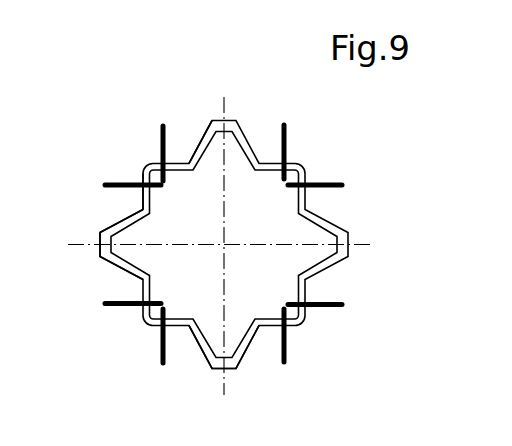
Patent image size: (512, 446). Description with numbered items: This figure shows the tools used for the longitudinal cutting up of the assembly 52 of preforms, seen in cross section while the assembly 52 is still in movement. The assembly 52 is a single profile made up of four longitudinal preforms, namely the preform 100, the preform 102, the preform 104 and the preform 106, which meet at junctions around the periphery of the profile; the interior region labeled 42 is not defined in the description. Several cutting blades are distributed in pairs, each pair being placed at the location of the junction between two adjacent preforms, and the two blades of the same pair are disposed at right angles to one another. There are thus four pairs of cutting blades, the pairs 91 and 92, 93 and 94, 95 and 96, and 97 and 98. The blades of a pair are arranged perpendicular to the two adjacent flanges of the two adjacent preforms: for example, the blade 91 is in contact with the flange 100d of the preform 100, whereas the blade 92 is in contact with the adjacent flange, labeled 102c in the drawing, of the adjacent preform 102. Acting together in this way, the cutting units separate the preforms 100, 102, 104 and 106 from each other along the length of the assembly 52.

The preform 100 is at (224, 78).
The flange 100d is at (196, 152).
The assembly 52 is at (190, 120).
The inner wall (second face) 42 is at (238, 178).
The cutting blade 91 is at (157, 140).
The cutting blade 92 is at (110, 183).
The cutting blade 93 is at (115, 308).
The cutting blade 94 is at (160, 348).
The cutting blade 95 is at (288, 352).
The cutting blade 96 is at (332, 309).
The cutting blade 97 is at (325, 181).
The cutting blade 98 is at (287, 138).
The preform 102 is at (78, 256).
The recessed portion of side lobe 102c is at (142, 195).
The preform 104 is at (210, 393).
The preform 106 is at (392, 246).